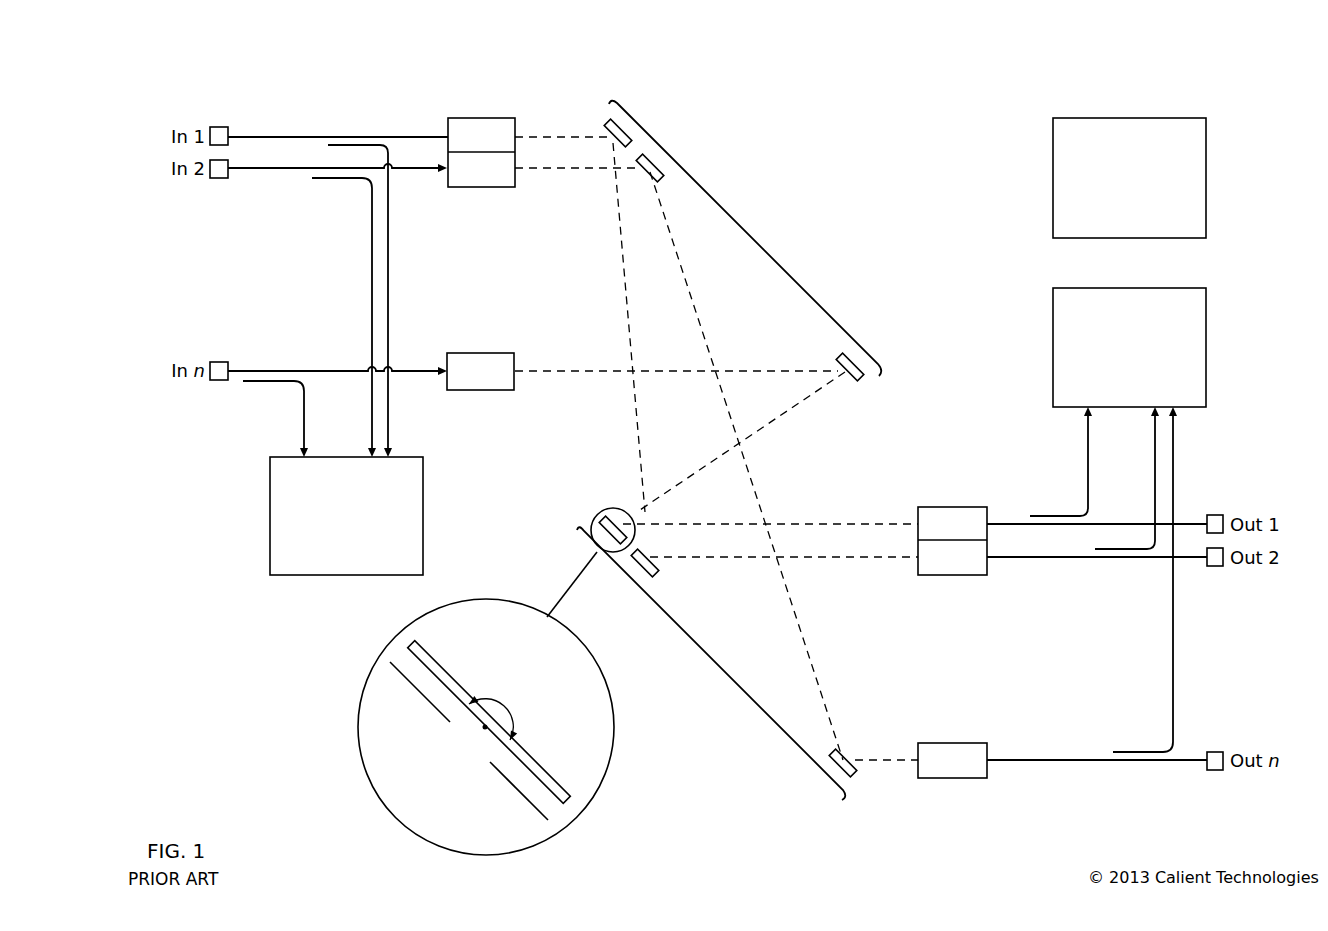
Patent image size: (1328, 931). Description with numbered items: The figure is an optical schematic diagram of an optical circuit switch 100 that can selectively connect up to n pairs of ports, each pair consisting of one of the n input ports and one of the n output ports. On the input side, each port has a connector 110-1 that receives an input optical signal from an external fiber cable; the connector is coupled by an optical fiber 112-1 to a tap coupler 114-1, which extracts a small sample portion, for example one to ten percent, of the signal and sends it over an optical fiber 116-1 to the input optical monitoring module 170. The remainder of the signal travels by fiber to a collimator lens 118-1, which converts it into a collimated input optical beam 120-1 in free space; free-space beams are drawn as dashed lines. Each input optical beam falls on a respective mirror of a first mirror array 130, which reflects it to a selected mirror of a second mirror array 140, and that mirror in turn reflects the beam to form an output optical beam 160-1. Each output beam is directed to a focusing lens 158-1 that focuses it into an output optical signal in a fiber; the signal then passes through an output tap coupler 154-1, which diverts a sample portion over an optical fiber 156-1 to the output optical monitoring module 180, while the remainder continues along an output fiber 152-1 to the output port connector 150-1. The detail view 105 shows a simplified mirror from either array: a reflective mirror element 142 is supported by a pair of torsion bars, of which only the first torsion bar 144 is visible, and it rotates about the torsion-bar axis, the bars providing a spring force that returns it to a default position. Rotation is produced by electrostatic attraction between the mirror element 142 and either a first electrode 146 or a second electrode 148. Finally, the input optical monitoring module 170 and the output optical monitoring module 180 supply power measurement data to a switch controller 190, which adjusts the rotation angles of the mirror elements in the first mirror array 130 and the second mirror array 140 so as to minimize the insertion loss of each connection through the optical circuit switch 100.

The optical circuit switch 100 is at (1146, 64).
The detail view 105 is at (553, 835).
The connector 110-1 is at (220, 127).
The optical fiber 112-1 is at (262, 135).
The tap coupler 114-1 is at (368, 135).
The optical fiber 116-1 is at (388, 288).
The collimator lens 118-1 is at (468, 118).
The input optical beam 120-1 is at (570, 132).
The first mirror array 130 is at (752, 237).
The second mirror array 140 is at (698, 659).
The mirror element 142 is at (440, 670).
The first torsion bar 144 is at (485, 727).
The first electrode 146 is at (418, 692).
The second electrode 148 is at (522, 790).
The connector 150-1 is at (1213, 515).
The output optical fiber 152-1 is at (1190, 520).
The output tap coupler 154-1 is at (1053, 515).
The optical fiber 156-1 is at (1084, 440).
The focusing lens 158-1 is at (933, 507).
The output optical beam 160-1 is at (889, 523).
The input optical monitoring module 170 is at (346, 516).
The output optical monitoring module 180 is at (1129, 347).
The switch controller 190 is at (1129, 178).